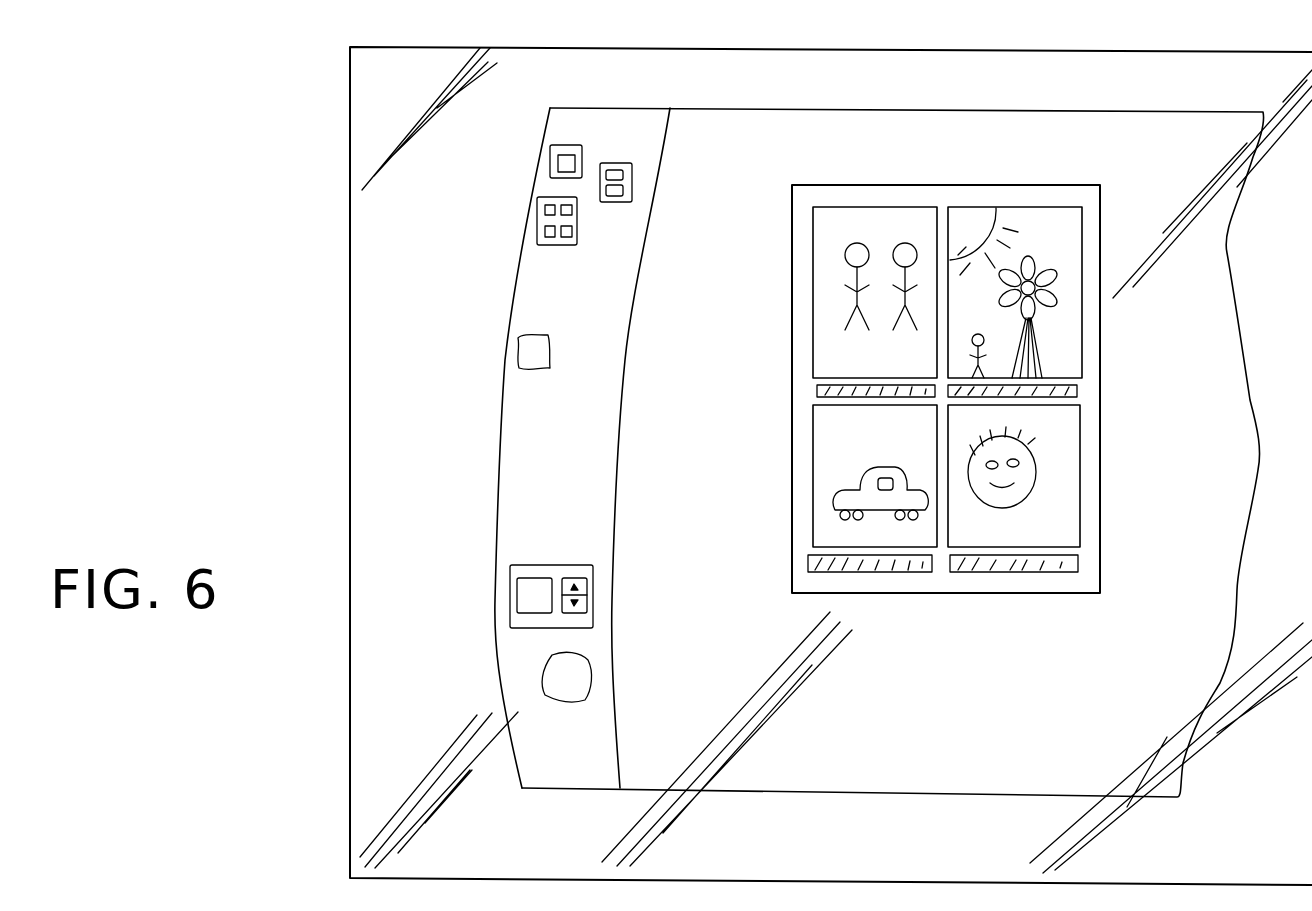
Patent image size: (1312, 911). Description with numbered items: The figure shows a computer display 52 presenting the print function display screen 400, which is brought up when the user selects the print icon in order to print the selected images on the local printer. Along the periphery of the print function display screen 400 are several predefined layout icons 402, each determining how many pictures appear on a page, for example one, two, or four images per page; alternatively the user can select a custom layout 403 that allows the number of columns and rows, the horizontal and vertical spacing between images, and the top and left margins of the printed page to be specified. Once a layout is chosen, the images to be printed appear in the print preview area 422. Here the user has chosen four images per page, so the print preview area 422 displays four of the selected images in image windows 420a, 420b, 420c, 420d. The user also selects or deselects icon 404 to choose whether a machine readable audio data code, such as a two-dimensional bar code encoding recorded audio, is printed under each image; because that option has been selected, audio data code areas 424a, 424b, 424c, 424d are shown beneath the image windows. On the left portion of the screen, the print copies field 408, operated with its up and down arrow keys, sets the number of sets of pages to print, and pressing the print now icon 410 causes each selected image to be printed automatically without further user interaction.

The computer display 52 is at (702, 52).
The print function display screen 400 is at (873, 112).
The layout icons 402 is at (616, 163).
The custom layout 403 is at (518, 350).
The icon 404 is at (508, 430).
The print copies field 408 is at (593, 600).
The print now icon 410 is at (540, 685).
The image window 420a is at (813, 258).
The image window 420b is at (1047, 208).
The image window 420c is at (813, 443).
The image window 420d is at (1083, 462).
The print preview area 422 is at (897, 185).
The audio data code area 424a is at (817, 390).
The audio data code area 424b is at (1082, 390).
The audio data code area 424c is at (887, 572).
The audio data code area 424d is at (1082, 557).